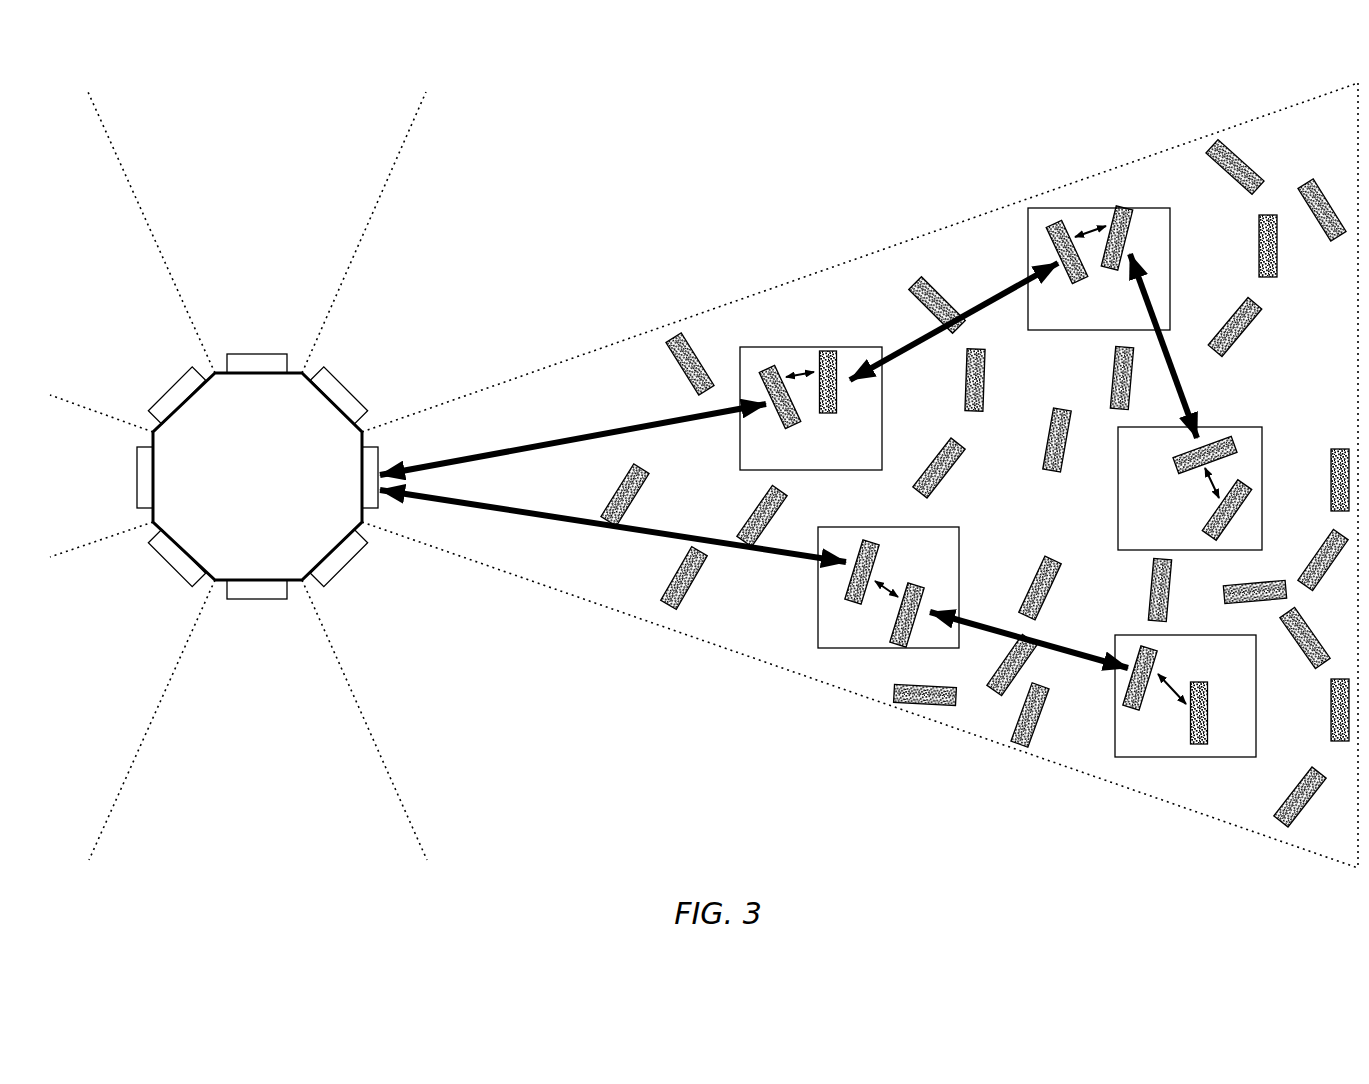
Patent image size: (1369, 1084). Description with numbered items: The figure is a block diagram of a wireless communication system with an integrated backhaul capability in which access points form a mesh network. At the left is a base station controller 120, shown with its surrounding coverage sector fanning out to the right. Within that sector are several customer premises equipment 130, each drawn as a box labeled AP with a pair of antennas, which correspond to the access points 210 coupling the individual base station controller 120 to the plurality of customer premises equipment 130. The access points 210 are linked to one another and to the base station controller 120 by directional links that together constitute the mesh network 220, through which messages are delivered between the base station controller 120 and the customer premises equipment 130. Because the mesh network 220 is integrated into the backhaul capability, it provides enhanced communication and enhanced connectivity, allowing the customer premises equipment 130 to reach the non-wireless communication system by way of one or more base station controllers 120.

The base station controller 120 is at (362, 630).
The customer premises equipment 130 is at (740, 437).
The access points 210 is at (772, 368).
The mesh network 220 is at (592, 432).